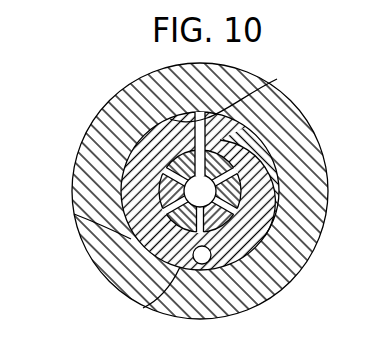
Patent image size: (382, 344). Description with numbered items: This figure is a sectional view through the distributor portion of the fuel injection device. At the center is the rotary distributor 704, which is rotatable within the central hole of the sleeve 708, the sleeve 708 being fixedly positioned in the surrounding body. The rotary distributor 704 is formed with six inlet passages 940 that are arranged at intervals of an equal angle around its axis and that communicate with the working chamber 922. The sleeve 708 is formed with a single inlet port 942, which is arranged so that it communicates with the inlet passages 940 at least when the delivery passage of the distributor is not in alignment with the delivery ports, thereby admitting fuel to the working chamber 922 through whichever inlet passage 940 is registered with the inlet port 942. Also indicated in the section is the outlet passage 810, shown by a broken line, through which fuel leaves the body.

The inlet port 942 is at (151, 86).
The inlet passages 940 is at (220, 140).
The rotary distributor 704 is at (158, 198).
The sleeve 708 is at (244, 120).
The working chamber 922 is at (268, 274).
The outlet passage 810 is at (144, 308).